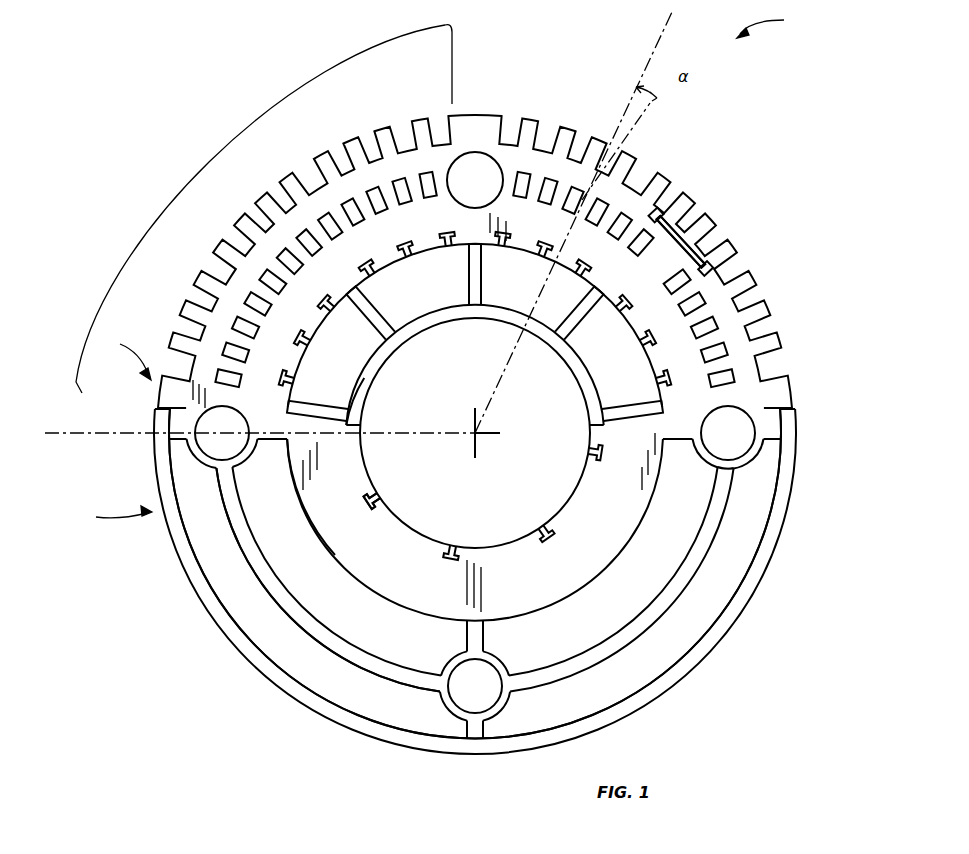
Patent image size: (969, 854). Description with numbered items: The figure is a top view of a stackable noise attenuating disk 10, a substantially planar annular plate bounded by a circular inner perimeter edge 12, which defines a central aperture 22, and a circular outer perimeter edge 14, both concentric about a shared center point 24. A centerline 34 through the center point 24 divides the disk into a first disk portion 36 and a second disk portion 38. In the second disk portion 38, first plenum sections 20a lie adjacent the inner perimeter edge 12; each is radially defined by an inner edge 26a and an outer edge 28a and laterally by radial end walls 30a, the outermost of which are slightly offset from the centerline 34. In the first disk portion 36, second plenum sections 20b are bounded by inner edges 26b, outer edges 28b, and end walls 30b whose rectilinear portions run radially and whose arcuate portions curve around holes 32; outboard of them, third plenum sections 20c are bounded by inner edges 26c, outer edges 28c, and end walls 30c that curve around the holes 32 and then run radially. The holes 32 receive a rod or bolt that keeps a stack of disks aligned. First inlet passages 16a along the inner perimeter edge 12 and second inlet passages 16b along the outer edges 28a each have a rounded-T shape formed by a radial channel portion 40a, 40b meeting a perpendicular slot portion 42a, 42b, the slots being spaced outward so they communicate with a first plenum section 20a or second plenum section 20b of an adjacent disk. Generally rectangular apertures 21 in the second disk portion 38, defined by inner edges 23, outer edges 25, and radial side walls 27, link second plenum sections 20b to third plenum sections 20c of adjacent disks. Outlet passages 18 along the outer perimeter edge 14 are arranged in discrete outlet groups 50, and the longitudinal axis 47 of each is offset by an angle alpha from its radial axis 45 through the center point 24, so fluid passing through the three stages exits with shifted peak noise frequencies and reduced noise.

The stackable noise attenuating disk 10 is at (773, 24).
The inner perimeter edge 12 is at (463, 396).
The outer perimeter edge 14 is at (478, 581).
The first inlet passages 16a is at (540, 530).
The second inlet passages 16b is at (640, 320).
The outlet passages 18 is at (190, 320).
The first plenum sections 20a is at (408, 320).
The second plenum sections 20b is at (267, 527).
The third plenum sections 20c is at (277, 632).
The apertures 21 is at (602, 205).
The central aperture 22 is at (452, 466).
The inner edges of apertures 23 is at (670, 263).
The center point 24 is at (480, 436).
The outer edges of apertures 25 is at (654, 268).
The inner edges of first plenum sections 26a is at (463, 303).
The inner edges of second plenum sections 26b is at (317, 537).
The inner edges of third plenum sections 26c is at (311, 630).
The side walls 27 is at (653, 247).
The outer edges of first plenum sections 28a is at (407, 261).
The outer edges of second plenum sections 28b is at (330, 631).
The outer edges of third plenum sections 28c is at (232, 618).
The end walls of first plenum sections 30a is at (468, 264).
The end walls of second plenum sections 30b is at (273, 442).
The end walls of third plenum sections 30c is at (180, 443).
The holes 32 is at (474, 168).
The centerline 34 is at (98, 441).
The first disk portion 36 is at (113, 517).
The second disk portion 38 is at (125, 353).
The channel portion of first inlet passage 40a is at (385, 498).
The channel portion of second inlet passage 40b is at (362, 368).
The slot portion of first inlet passage 42a is at (368, 503).
The slot portion of second inlet passage 42b is at (300, 348).
The radial axis 45 is at (662, 30).
The longitudinal axis of outlet passage 47 is at (650, 111).
The outlet group 50 is at (178, 152).